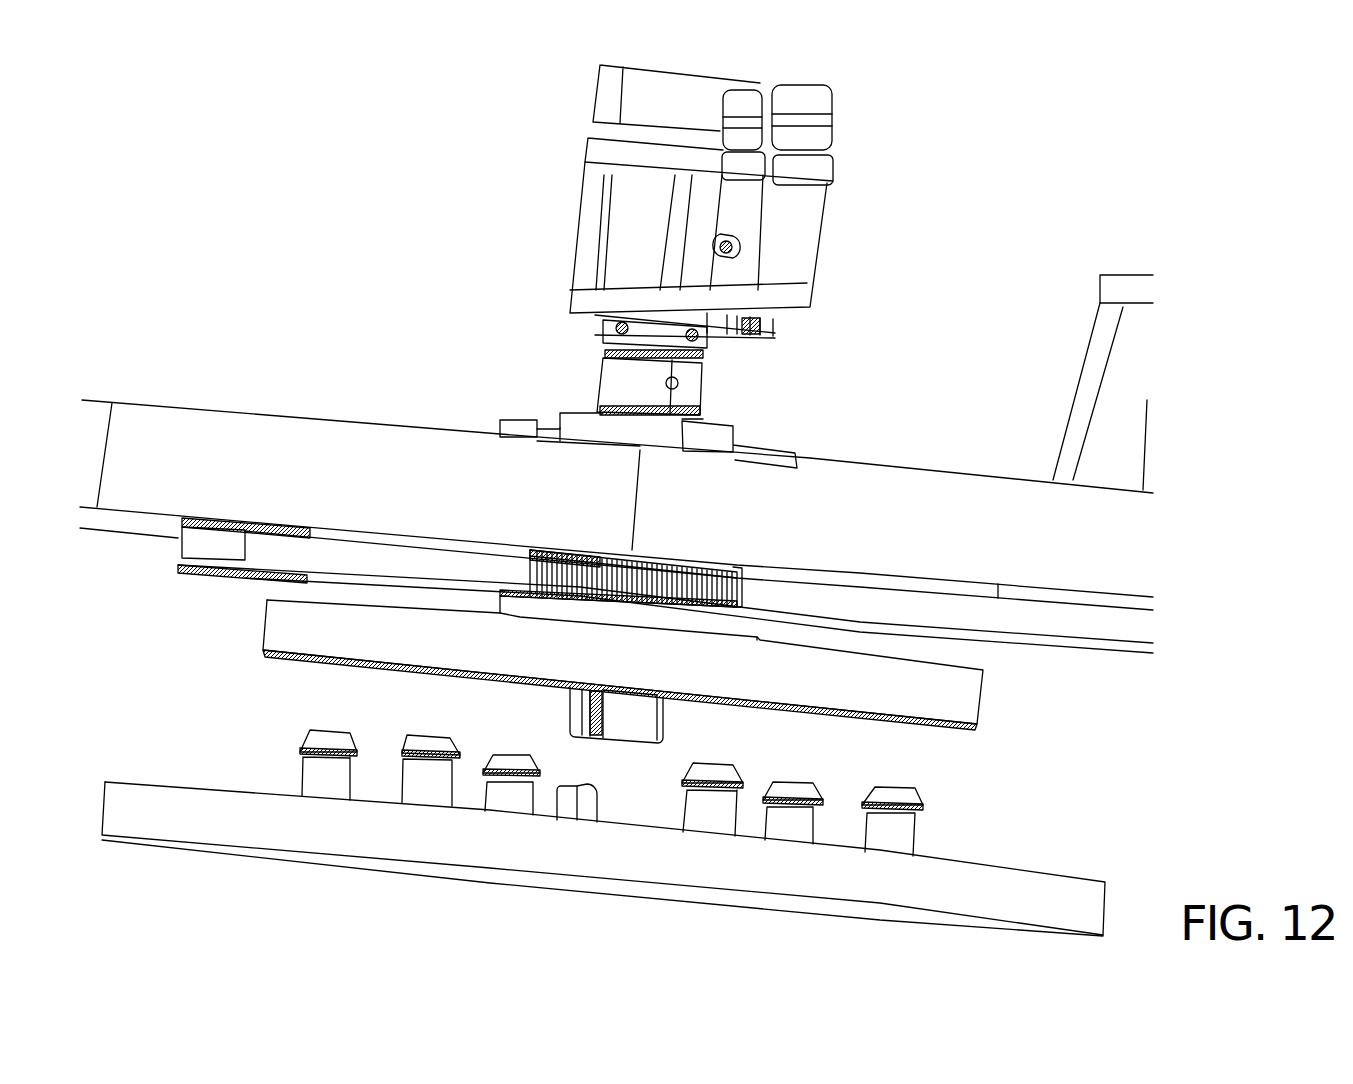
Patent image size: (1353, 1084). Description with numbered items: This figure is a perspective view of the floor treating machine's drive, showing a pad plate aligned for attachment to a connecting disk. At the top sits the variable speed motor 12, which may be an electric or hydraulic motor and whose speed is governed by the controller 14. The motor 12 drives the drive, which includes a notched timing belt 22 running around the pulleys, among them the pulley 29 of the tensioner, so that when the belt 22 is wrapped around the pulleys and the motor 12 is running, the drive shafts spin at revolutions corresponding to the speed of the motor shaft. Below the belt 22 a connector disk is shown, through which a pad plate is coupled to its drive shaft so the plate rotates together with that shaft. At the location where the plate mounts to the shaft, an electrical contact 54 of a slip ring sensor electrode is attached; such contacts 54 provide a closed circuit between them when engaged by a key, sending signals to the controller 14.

The variable speed motor 12 is at (820, 243).
The controller 14 is at (827, 102).
The notched timing belt 22 is at (1105, 625).
The pulley 29 is at (183, 580).
The electrical contact 54 is at (577, 703).